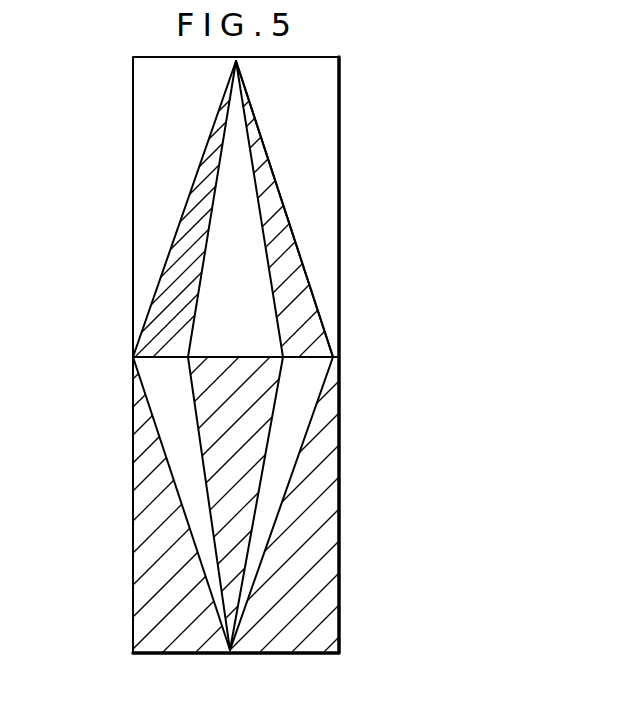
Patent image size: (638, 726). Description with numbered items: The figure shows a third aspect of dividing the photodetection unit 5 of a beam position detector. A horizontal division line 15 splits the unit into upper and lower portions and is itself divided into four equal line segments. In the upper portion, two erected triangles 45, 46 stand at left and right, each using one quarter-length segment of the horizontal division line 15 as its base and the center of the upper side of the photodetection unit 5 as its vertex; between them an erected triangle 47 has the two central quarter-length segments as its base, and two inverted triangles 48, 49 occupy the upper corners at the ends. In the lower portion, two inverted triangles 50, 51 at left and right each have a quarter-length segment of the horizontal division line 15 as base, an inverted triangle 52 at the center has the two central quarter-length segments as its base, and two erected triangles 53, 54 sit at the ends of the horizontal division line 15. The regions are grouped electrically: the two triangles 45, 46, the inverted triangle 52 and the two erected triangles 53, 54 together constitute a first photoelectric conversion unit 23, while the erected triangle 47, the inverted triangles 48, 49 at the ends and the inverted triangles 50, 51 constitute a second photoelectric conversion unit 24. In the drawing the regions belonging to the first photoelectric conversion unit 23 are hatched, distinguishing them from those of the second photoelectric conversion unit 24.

The photodetection unit 5 is at (364, 318).
The horizontal division line 15 is at (226, 357).
The first photoelectric conversion unit 23 is at (278, 167).
The second photoelectric conversion unit 24 is at (300, 475).
The erected triangle 45 is at (175, 262).
The erected triangle 46 is at (285, 268).
The erected triangle 47 is at (232, 226).
The inverted triangle 48 is at (165, 185).
The inverted triangle 49 is at (320, 114).
The inverted triangle 50 is at (175, 448).
The inverted triangle 51 is at (295, 408).
The inverted triangle 52 is at (223, 513).
The erected triangle 53 is at (146, 611).
The erected triangle 54 is at (298, 580).